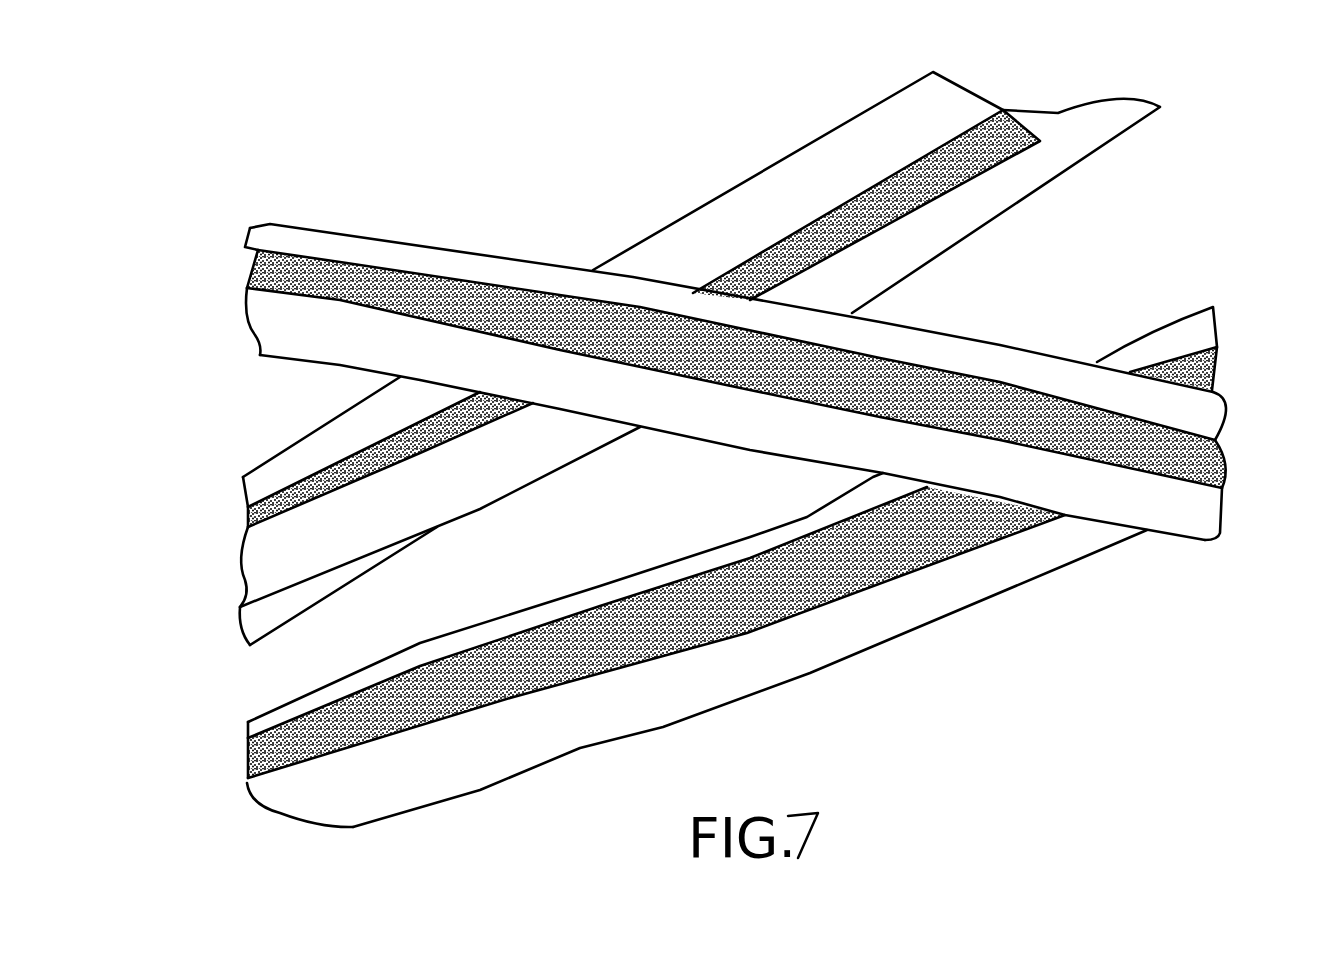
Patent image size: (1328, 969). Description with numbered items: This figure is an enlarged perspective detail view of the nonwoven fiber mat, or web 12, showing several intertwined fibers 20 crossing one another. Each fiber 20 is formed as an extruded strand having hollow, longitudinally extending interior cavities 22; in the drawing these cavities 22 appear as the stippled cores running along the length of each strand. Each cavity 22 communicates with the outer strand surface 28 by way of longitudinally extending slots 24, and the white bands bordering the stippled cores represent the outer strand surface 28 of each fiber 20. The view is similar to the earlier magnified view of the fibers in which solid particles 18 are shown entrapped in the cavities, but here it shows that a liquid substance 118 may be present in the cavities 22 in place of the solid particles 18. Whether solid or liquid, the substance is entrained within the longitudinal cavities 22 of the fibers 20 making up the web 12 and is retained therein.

The web 12 is at (1180, 279).
The solid particles 18 is at (963, 130).
The fiber 20 is at (1027, 160).
The interior cavities 22 is at (283, 282).
The slots 24 is at (946, 437).
The outer strand surface 28 is at (680, 257).
The liquid substance 118 is at (1213, 450).